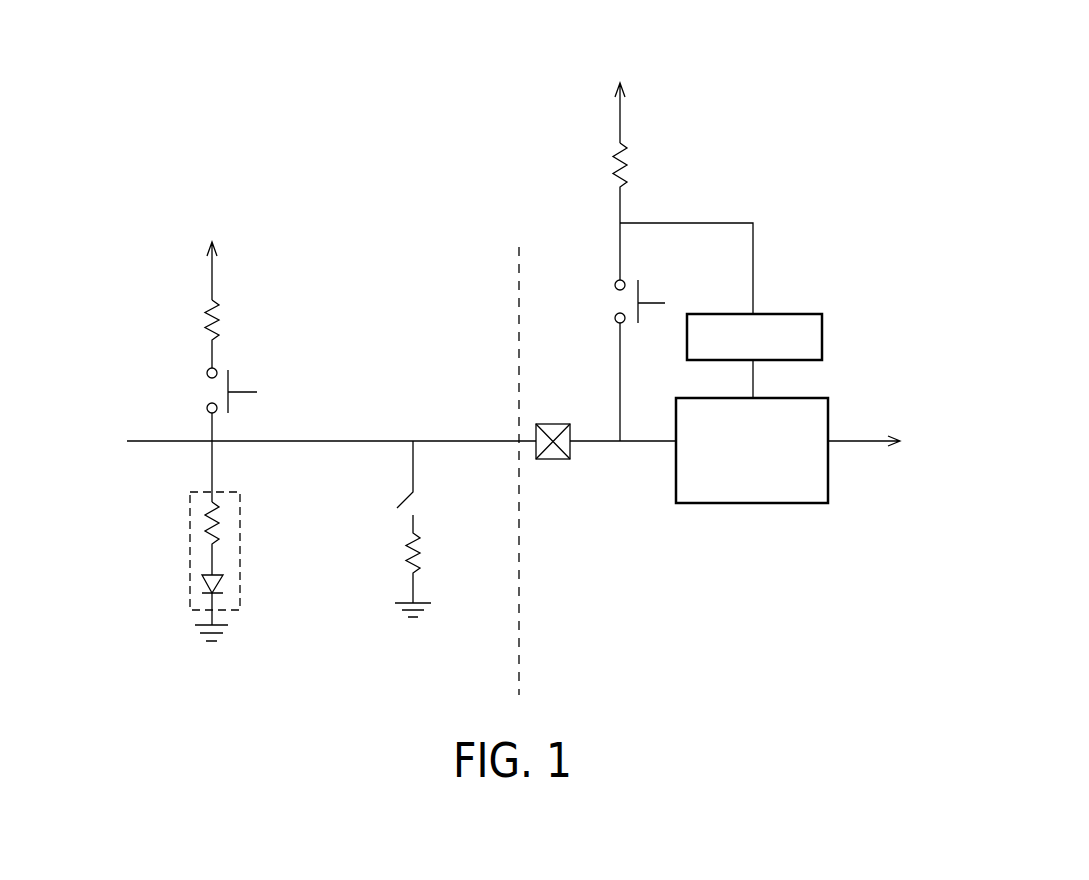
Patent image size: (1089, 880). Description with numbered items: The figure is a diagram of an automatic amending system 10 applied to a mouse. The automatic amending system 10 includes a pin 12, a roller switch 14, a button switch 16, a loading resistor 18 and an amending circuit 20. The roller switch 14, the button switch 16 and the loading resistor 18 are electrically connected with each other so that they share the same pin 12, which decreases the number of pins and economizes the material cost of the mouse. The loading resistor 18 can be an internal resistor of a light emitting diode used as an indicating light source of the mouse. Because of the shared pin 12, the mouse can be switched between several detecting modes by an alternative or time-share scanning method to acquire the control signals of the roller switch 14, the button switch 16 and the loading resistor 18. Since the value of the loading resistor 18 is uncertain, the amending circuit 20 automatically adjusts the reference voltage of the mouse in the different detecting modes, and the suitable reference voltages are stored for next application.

The automatic amending system 10 is at (970, 120).
The pin 12 is at (553, 424).
The roller switch 14 is at (665, 303).
The button switch 16 is at (257, 392).
The loading resistor 18 is at (190, 544).
The amending circuit 20 is at (740, 503).